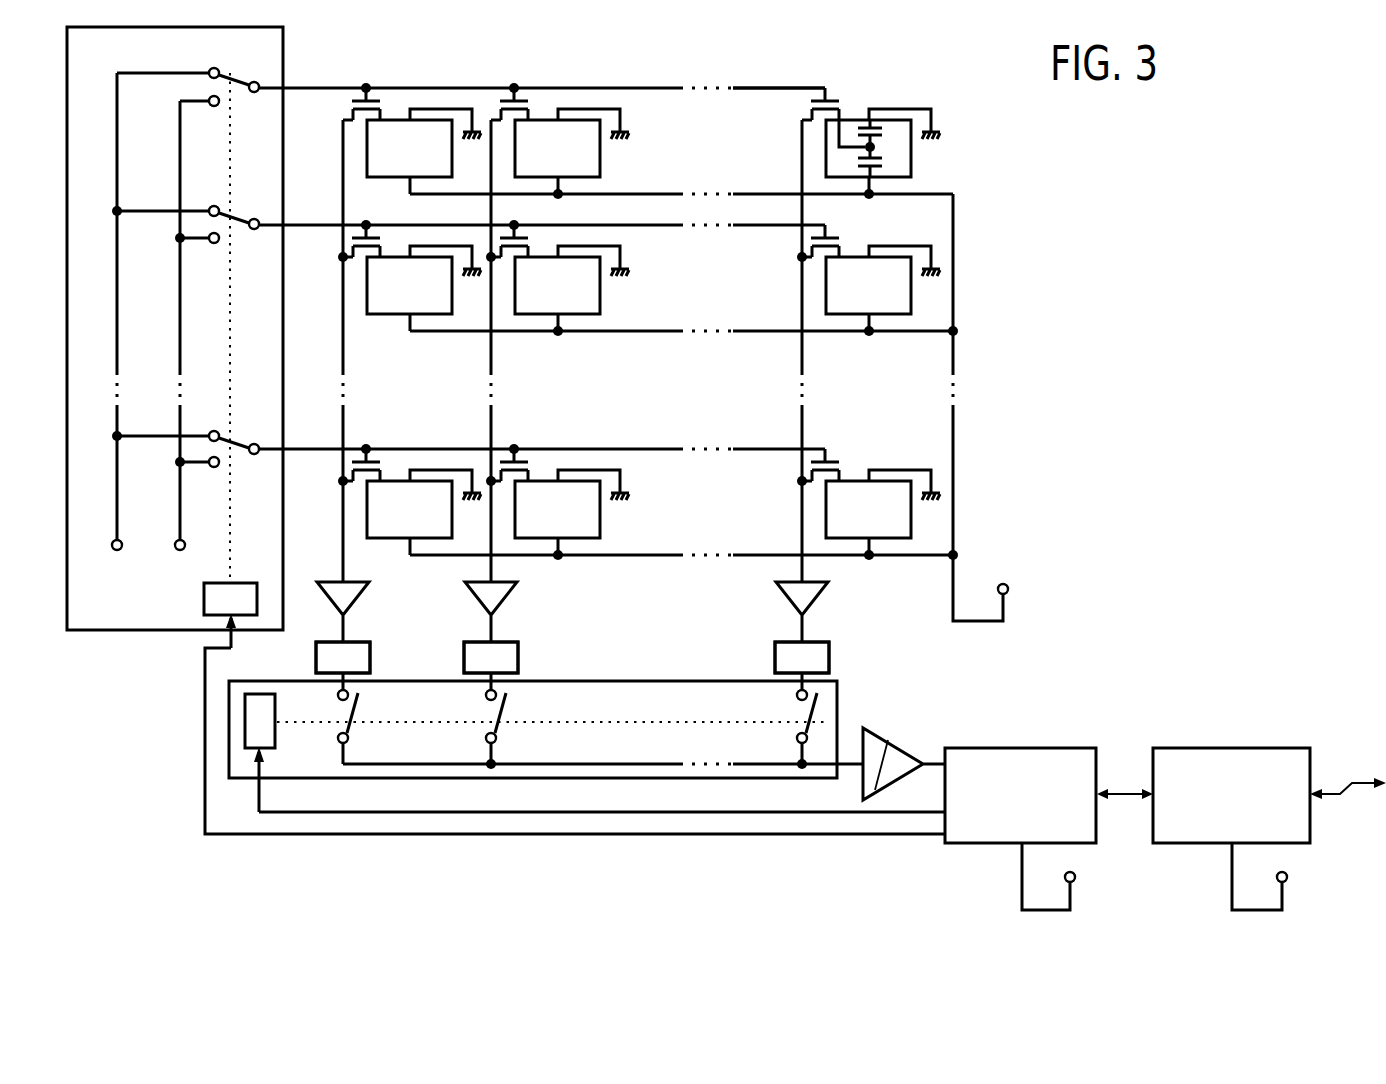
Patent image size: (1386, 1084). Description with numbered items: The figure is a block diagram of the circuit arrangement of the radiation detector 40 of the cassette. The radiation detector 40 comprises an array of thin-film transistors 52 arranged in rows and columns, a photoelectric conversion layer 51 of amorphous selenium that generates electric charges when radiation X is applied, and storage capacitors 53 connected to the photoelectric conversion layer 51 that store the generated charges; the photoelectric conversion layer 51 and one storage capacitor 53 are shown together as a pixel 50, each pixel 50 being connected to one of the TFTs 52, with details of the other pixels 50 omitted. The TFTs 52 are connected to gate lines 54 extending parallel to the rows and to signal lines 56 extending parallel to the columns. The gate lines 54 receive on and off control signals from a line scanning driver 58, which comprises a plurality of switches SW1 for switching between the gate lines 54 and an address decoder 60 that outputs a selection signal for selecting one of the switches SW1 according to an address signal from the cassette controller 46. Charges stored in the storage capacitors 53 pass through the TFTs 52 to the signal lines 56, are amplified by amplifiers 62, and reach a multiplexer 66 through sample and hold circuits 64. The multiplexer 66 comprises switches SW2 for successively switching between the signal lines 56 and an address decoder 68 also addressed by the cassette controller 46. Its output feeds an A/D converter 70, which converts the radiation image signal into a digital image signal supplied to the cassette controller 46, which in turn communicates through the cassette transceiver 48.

The radiation detector 40 is at (641, 320).
The cassette controller 46 is at (1071, 748).
The cassette transceiver 48 is at (1278, 748).
The pixel 50 is at (603, 160).
The photoelectric conversion layer 51 is at (882, 162).
The thin-film transistor 52 is at (812, 103).
The storage capacitor 53 is at (891, 130).
The gate line 54 is at (778, 88).
The signal line 56 is at (802, 145).
The line scanning driver 58 is at (67, 75).
The address decoder 60 is at (204, 599).
The amplifier 62 is at (514, 595).
The sample and hold circuit 64 is at (518, 657).
The multiplexer 66 is at (677, 681).
The address decoder 68 is at (277, 728).
The A/D converter 70 is at (925, 737).
The switch SW1 is at (238, 72).
The switch SW2 is at (822, 700).